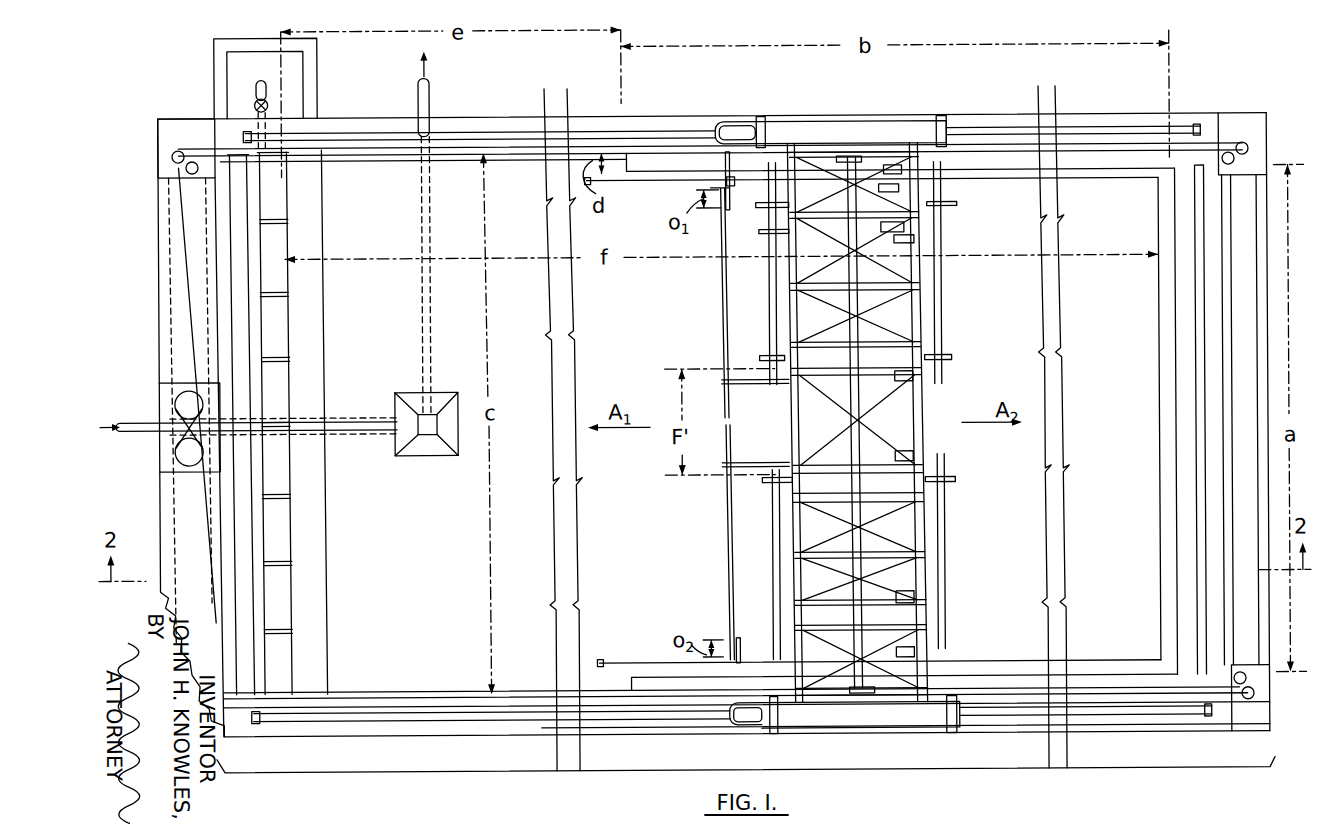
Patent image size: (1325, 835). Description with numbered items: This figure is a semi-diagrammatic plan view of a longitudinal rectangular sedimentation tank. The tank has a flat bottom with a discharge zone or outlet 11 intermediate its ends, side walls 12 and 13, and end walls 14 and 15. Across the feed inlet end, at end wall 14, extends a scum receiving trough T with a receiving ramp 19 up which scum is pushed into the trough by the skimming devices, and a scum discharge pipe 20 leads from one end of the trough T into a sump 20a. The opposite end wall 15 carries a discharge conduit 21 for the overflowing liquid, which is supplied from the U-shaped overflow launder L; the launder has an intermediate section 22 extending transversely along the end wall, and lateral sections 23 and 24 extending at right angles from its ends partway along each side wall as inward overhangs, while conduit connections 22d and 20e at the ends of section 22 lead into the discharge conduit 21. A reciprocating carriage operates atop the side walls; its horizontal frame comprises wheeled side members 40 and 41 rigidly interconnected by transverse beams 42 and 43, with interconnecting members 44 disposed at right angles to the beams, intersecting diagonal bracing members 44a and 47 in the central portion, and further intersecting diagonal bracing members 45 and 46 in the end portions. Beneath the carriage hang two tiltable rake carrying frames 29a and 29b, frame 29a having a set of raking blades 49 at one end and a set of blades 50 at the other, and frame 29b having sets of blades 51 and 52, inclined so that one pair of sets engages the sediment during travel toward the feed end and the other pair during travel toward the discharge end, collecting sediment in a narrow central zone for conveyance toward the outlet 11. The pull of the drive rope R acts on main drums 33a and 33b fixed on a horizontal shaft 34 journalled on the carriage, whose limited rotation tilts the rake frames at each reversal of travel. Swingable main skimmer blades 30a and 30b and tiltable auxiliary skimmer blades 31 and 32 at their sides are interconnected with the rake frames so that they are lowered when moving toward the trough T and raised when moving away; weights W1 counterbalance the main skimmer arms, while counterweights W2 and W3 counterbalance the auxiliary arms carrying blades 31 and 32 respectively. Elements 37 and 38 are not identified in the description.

The discharge zone or outlet 11 is at (432, 455).
The side wall 12 is at (467, 120).
The side wall 13 is at (470, 735).
The end wall 14 is at (159, 272).
The end wall 15 is at (1268, 185).
The receiving ramp 19 is at (324, 347).
The scum discharge pipe 20 is at (259, 110).
The sump 20a is at (306, 77).
The conduit connection 20e is at (1215, 680).
The discharge trough or conduit 21 is at (1257, 328).
The intermediate section of launder 22 is at (1180, 288).
The conduit connection 22d is at (1201, 160).
The lateral launder section 23 is at (1113, 170).
The lateral launder section 24 is at (1112, 677).
The rake carrying frame 29a is at (767, 345).
The rake carrying frame 29b is at (776, 566).
The main skimmer blade element 30a is at (722, 316).
The main skimmer blade element 30b is at (724, 576).
The auxiliary skimmer blade element 31 is at (728, 206).
The auxiliary skimmer blade element 32 is at (737, 653).
The main drum 33a is at (853, 158).
The main drum 33b is at (870, 694).
The horizontal shaft 34 is at (860, 306).
The upper right rail 37 is at (1090, 128).
The lower right rail 38 is at (1152, 718).
The wheeled side member 40 is at (900, 133).
The wheeled side member 41 is at (917, 712).
The transverse beam 42 is at (922, 432).
The transverse beam 43 is at (790, 412).
The interconnecting member 44 is at (838, 291).
The diagonal bracing member 44a is at (832, 448).
The diagonal bracing member 45 is at (937, 240).
The diagonal bracing member 46 is at (870, 600).
The diagonal bracing member 47 is at (881, 454).
The set of raking blades 49 is at (766, 308).
The set of raking blades 50 is at (944, 262).
The set of raking blades 51 is at (780, 525).
The set of raking blades 52 is at (937, 542).
The scum receiving trough T is at (243, 197).
The drive rope R is at (367, 150).
The overflow receiving discharge launder L is at (1163, 364).
The counterbalancing weights W1 is at (920, 232).
The counterweights W2 is at (918, 178).
The counterweights W3 is at (917, 655).